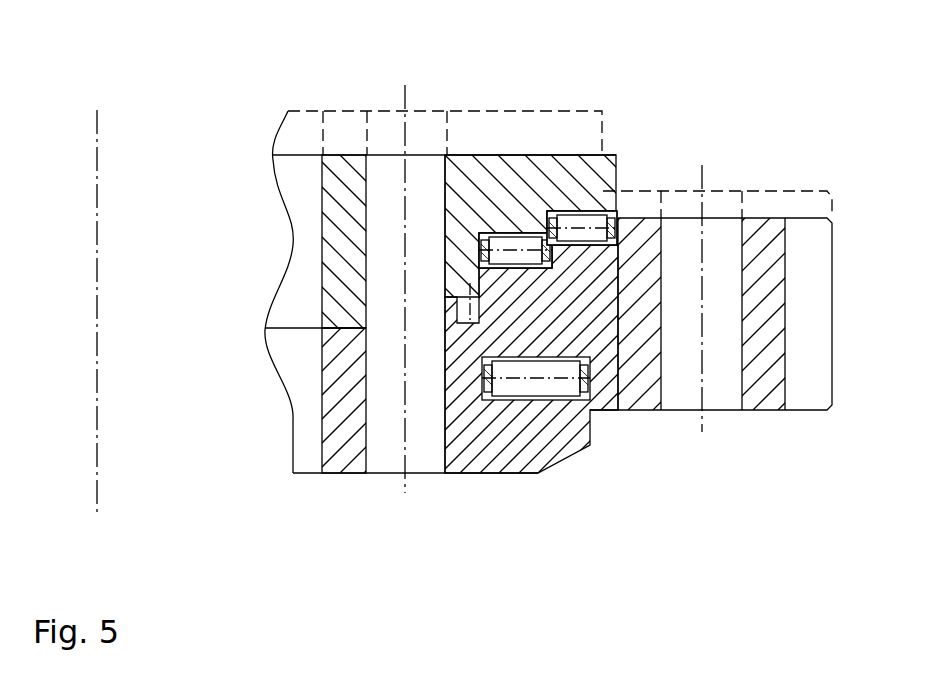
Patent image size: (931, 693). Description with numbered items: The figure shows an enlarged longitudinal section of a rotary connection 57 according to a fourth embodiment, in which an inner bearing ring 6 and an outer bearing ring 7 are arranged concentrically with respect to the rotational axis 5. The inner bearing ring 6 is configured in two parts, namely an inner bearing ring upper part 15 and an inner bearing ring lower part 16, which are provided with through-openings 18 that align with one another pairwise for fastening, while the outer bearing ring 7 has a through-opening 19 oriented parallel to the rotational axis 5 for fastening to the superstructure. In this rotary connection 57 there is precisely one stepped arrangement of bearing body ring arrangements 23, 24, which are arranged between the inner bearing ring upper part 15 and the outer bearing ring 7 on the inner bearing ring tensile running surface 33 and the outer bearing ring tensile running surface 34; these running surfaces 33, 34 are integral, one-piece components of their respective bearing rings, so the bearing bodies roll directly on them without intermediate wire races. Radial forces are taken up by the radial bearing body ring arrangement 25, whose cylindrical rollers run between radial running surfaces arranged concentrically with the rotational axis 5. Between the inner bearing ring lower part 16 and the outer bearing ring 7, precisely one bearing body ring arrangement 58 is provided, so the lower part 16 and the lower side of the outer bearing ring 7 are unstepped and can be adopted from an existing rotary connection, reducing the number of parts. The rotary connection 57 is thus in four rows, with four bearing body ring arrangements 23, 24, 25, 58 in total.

The rotational axis 5 is at (97, 162).
The inner bearing ring 6 is at (427, 152).
The outer bearing ring 7 is at (635, 412).
The inner bearing ring upper part 15 is at (337, 160).
The inner bearing ring lower part 16 is at (335, 465).
The through-openings 18 is at (391, 167).
The through-opening 19 is at (710, 403).
The bearing body ring arrangement 23 is at (583, 209).
The bearing body ring arrangement 24 is at (499, 226).
The radial bearing body ring arrangement 25 is at (465, 313).
The inner bearing ring tensile running surface 33 is at (594, 230).
The outer bearing ring tensile running surface 34 is at (555, 212).
The rotary connection 57 is at (661, 100).
The bearing body ring arrangement 58 is at (548, 403).